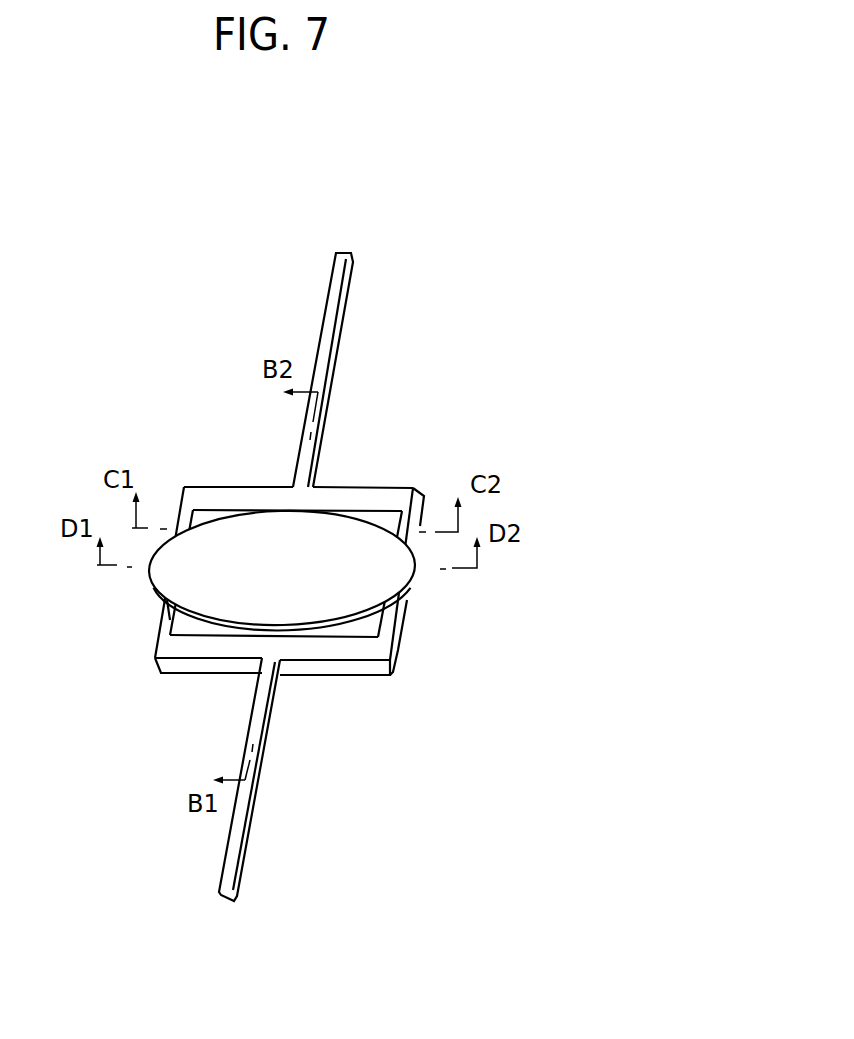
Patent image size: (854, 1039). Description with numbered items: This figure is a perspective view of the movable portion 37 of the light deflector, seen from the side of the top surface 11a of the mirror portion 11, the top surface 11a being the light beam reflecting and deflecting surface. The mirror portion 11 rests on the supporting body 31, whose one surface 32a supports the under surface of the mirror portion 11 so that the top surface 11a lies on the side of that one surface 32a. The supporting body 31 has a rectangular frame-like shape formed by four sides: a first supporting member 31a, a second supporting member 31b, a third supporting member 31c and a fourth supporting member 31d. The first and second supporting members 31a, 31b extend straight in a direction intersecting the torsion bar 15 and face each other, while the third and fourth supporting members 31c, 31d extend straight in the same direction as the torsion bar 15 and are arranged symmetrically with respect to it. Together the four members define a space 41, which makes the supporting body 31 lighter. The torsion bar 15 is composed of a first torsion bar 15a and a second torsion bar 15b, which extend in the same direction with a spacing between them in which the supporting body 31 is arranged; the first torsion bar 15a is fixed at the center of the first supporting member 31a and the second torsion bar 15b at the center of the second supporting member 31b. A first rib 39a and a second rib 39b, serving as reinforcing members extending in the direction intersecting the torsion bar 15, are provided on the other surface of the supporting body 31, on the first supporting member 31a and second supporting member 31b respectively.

The movable portion 37 is at (487, 247).
The supporting body 31 is at (348, 484).
The first supporting member 31a is at (203, 497).
The second supporting member 31b is at (223, 645).
The third supporting member 31c is at (167, 622).
The fourth supporting member 31d is at (383, 622).
The one surface of the supporting body 32a is at (282, 467).
The first rib 39a is at (430, 510).
The second rib 39b is at (393, 658).
The space 41 is at (170, 667).
The mirror portion 11 is at (360, 628).
The top surface 11a is at (297, 588).
The torsion bar 15 is at (326, 262).
The first torsion bar 15a is at (326, 308).
The second torsion bar 15b is at (225, 855).